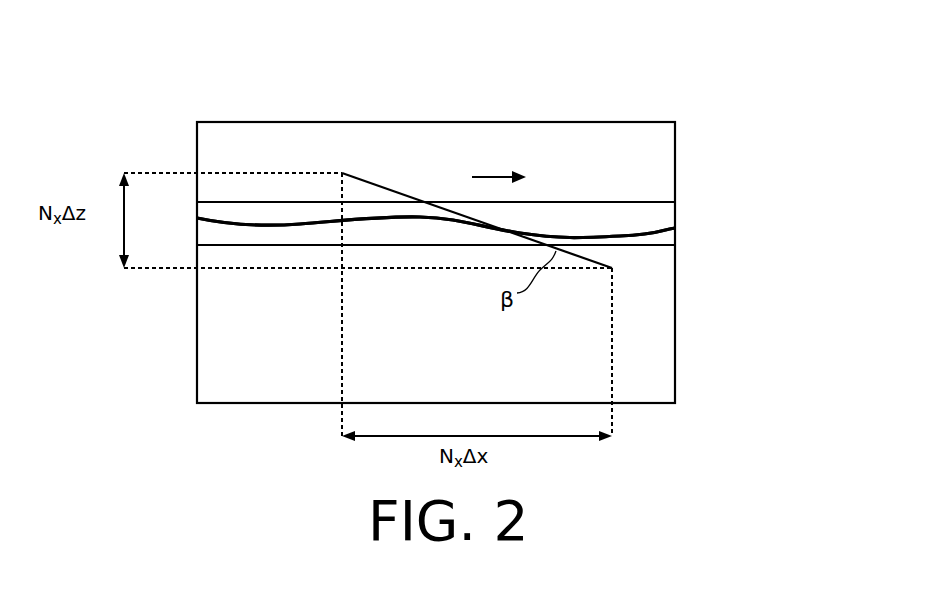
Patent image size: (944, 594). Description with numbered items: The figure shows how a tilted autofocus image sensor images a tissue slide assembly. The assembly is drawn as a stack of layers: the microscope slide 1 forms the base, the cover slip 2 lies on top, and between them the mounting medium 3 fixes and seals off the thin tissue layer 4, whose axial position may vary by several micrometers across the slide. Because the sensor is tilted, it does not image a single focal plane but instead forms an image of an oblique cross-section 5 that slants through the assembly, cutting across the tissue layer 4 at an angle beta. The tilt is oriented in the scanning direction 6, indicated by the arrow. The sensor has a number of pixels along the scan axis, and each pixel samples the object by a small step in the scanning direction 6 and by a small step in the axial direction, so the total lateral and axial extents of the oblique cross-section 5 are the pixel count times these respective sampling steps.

The microscope slide 1 is at (665, 324).
The cover slip 2 is at (665, 163).
The mounting medium 3 is at (665, 215).
The tissue layer 4 is at (665, 232).
The oblique cross-section 5 is at (362, 179).
The scanning direction 6 is at (500, 177).